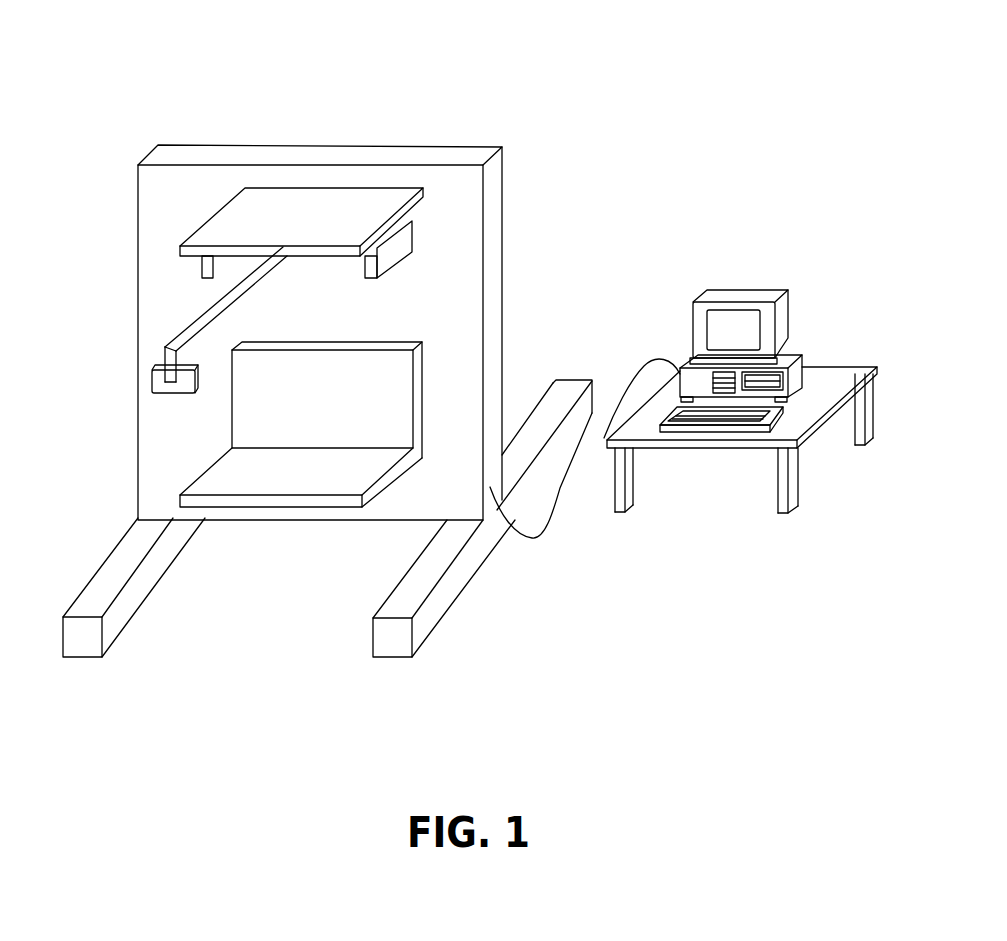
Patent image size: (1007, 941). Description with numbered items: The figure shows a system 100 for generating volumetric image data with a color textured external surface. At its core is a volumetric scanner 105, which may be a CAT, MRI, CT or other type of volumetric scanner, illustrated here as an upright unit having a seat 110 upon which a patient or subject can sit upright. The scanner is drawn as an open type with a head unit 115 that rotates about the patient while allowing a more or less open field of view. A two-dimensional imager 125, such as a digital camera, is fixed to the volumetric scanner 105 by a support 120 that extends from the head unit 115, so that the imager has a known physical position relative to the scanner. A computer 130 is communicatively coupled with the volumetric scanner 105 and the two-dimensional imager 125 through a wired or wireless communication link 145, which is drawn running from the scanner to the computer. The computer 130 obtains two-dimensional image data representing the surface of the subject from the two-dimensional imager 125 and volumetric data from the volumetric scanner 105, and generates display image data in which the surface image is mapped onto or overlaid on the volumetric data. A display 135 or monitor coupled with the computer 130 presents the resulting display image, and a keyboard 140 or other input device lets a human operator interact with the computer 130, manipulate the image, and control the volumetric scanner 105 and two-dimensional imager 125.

The system 100 is at (568, 50).
The volumetric scanner 105 is at (358, 332).
The seat 110 is at (301, 450).
The head unit 115 is at (465, 229).
The support 120 is at (179, 314).
The two-dimensional imager 125 is at (125, 393).
The computer 130 is at (770, 358).
The display 135 is at (739, 305).
The keyboard 140 is at (721, 459).
The communication link 145 is at (585, 480).